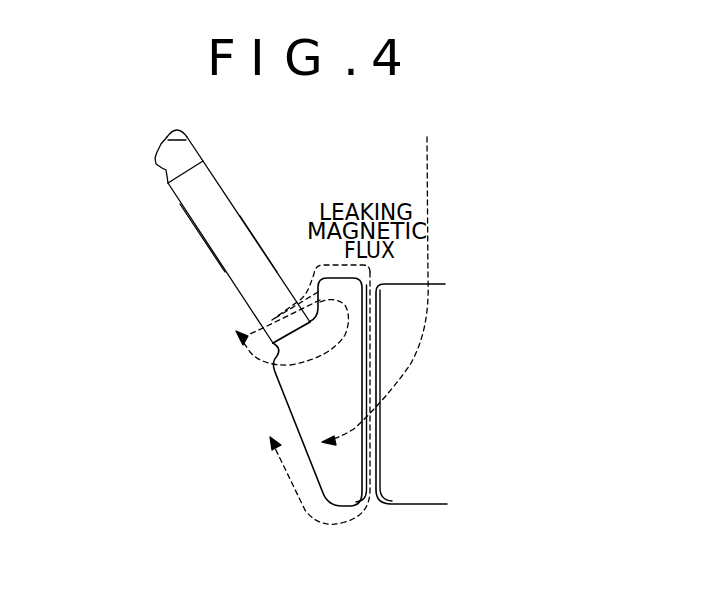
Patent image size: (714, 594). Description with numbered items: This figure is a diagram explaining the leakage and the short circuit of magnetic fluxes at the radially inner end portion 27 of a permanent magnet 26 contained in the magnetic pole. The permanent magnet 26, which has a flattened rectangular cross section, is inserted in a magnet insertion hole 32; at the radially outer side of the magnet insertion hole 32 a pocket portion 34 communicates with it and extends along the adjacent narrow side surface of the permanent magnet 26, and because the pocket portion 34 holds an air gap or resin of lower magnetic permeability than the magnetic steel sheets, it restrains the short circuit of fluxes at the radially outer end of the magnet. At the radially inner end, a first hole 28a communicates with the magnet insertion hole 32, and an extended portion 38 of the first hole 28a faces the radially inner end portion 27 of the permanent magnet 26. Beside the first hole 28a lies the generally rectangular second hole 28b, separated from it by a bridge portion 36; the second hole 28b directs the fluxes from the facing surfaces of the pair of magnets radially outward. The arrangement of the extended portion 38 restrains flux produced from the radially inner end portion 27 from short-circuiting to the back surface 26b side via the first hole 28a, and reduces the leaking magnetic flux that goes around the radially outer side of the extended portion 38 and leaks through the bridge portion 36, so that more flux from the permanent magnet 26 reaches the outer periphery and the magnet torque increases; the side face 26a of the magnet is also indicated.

The permanent magnet 26 is at (228, 231).
The side face of magnet 26a is at (277, 262).
The back surface 26b is at (237, 293).
The radially inner end portion 27 is at (250, 333).
The first hole 28a is at (320, 392).
The second hole 28b is at (362, 330).
The magnet insertion hole 32 is at (192, 222).
The pocket portion 34 is at (189, 138).
The bridge portion 36 is at (377, 450).
The extended portion 38 is at (353, 300).